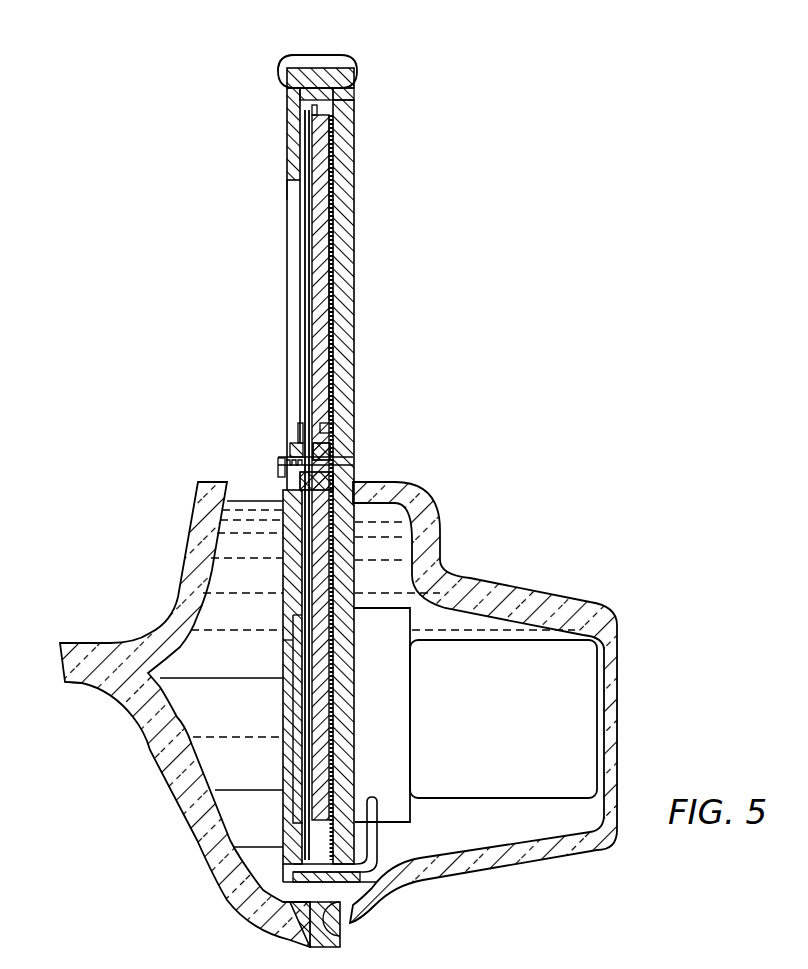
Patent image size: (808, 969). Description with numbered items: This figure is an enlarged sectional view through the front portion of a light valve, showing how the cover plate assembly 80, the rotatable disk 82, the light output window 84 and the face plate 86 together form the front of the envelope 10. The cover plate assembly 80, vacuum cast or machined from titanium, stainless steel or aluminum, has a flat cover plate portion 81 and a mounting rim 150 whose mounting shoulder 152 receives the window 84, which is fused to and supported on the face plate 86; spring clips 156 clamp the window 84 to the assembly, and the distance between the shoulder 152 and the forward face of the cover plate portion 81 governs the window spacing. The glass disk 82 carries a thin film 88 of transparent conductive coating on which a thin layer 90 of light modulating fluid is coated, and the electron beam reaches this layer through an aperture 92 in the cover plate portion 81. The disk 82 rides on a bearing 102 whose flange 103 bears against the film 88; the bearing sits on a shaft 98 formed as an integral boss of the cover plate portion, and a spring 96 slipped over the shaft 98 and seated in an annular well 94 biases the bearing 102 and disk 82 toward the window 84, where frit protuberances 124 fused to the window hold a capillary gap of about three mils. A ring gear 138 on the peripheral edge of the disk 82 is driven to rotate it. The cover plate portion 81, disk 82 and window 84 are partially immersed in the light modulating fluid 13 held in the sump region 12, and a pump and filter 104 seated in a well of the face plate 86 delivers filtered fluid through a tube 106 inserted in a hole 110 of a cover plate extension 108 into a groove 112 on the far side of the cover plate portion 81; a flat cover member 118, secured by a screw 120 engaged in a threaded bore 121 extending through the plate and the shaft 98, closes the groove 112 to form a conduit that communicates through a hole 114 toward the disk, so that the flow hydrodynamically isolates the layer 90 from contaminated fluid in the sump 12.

The envelope 10 is at (107, 657).
The sump region 12 is at (213, 797).
The light modulating fluid 13 is at (247, 767).
The cover plate assembly 80 is at (287, 139).
The cover plate portion 81 is at (293, 107).
The rotatable disk 82 is at (313, 217).
The light output window 84 is at (350, 233).
The face plate 86 is at (437, 550).
The thin film 88 is at (310, 300).
The light modulating fluid layer 90 is at (305, 310).
The aperture 92 is at (293, 272).
The well 94 is at (293, 440).
The spring 96 is at (298, 492).
The shaft 98 is at (370, 478).
The bearing 102 is at (323, 423).
The flange 103 is at (303, 427).
The pump and filter 104 is at (527, 738).
The tube 106 is at (257, 920).
The cover plate extension 108 is at (367, 920).
The hole 110 is at (303, 868).
The groove 112 is at (290, 697).
The hole 114 is at (292, 616).
The cover member 118 is at (280, 640).
The screw 120 is at (278, 462).
The threaded bore 121 is at (337, 465).
The frit protuberances 124 is at (327, 150).
The ring gear 138 is at (353, 795).
The mounting rim 150 is at (347, 75).
The mounting shoulder 152 is at (350, 90).
The spring clips 156 is at (283, 67).